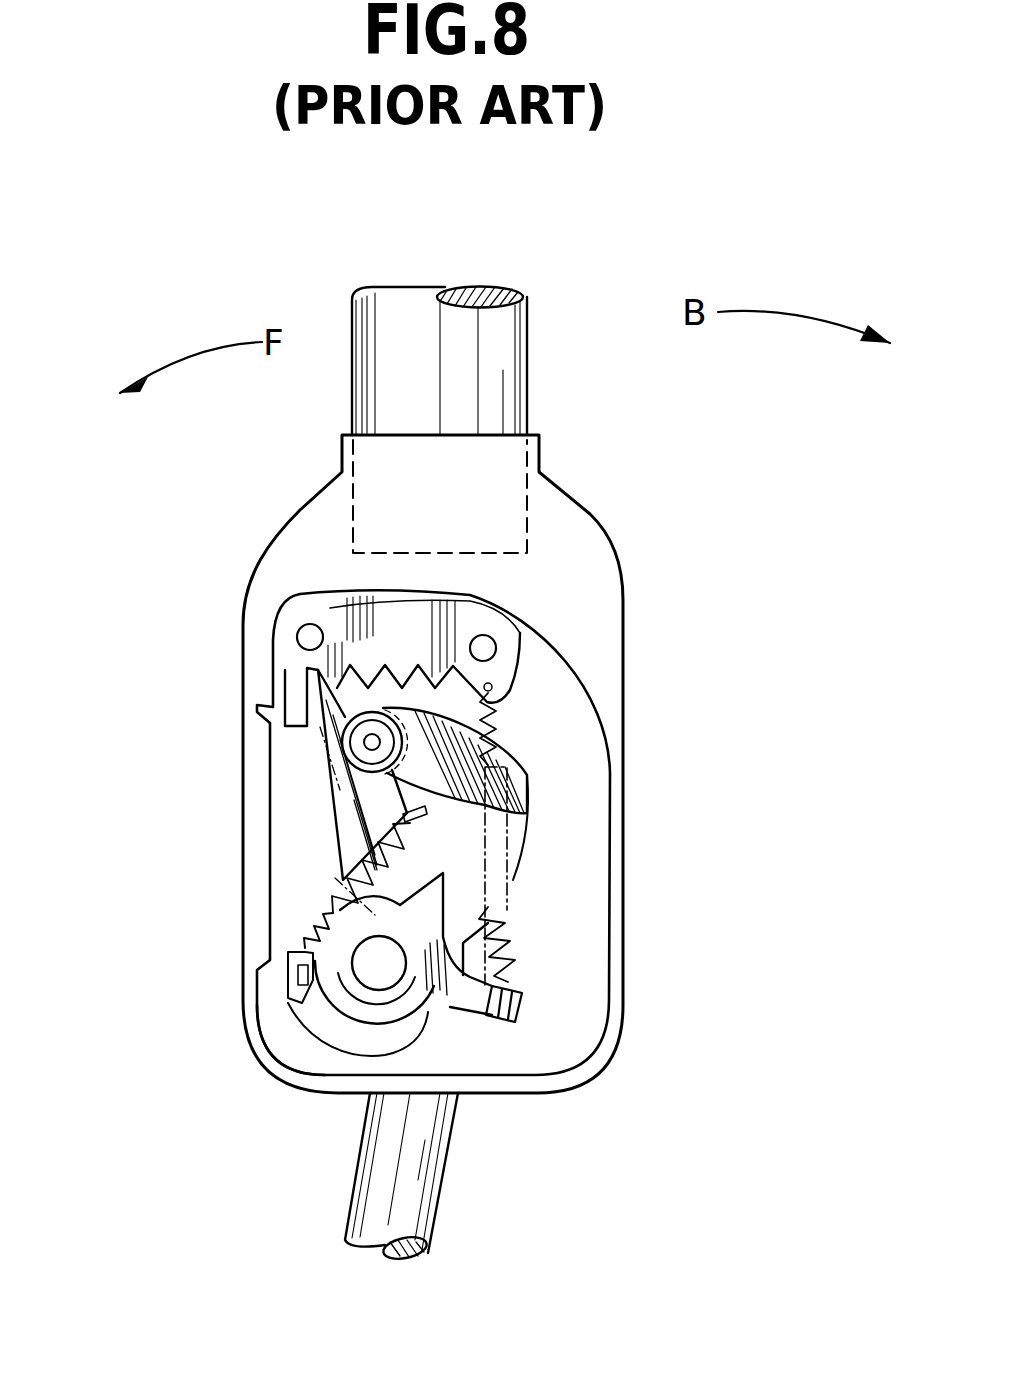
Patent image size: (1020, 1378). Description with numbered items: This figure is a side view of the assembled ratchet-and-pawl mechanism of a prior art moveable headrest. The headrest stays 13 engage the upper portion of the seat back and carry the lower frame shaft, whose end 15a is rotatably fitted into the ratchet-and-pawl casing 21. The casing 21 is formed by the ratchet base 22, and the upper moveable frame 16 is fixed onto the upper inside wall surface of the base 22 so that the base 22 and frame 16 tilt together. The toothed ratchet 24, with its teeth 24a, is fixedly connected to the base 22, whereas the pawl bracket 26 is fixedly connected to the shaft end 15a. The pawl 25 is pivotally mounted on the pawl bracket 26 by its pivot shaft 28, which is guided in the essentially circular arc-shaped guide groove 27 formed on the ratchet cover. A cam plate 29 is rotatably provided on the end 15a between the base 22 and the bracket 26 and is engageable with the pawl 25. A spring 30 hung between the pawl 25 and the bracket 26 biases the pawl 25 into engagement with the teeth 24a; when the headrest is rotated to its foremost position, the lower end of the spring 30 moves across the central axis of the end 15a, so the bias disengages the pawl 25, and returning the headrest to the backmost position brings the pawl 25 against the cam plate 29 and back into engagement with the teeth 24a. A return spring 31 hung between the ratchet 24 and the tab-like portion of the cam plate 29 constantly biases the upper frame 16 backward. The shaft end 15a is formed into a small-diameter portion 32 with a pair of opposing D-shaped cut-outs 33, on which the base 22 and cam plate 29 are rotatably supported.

The headrest stays 13 is at (422, 1168).
The end of the lower frame shaft 15a is at (272, 1070).
The upper moveable frame 16 is at (500, 352).
The ratchet-and-pawl casing 21 is at (587, 510).
The ratchet base 22 is at (310, 533).
The toothed ratchet 24 is at (493, 623).
The teeth 24a is at (367, 660).
The pawl 25 is at (320, 707).
The pawl bracket 26 is at (585, 1003).
The guide groove 27 is at (527, 773).
The pivot shaft 28 is at (365, 743).
The cam plate 29 is at (432, 903).
The spring 30 is at (310, 947).
The return spring 31 is at (503, 833).
The small-diameter portion 32 is at (372, 975).
The cut-outs 33 is at (307, 1020).